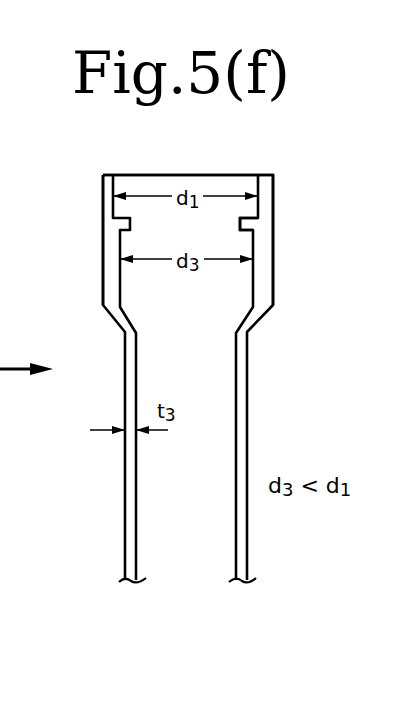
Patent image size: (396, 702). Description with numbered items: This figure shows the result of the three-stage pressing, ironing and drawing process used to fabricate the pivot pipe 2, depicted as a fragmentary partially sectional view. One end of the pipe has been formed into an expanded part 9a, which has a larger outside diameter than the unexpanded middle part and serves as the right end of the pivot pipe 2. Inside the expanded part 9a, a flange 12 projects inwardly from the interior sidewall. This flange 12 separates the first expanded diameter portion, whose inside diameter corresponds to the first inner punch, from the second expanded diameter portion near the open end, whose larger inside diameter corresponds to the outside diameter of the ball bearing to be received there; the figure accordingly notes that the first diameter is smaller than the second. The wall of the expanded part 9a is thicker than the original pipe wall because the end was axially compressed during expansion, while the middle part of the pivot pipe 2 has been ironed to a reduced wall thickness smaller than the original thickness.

The pivot pipe 2 is at (254, 423).
The expanded part 9a is at (273, 252).
The flange 12 is at (243, 216).